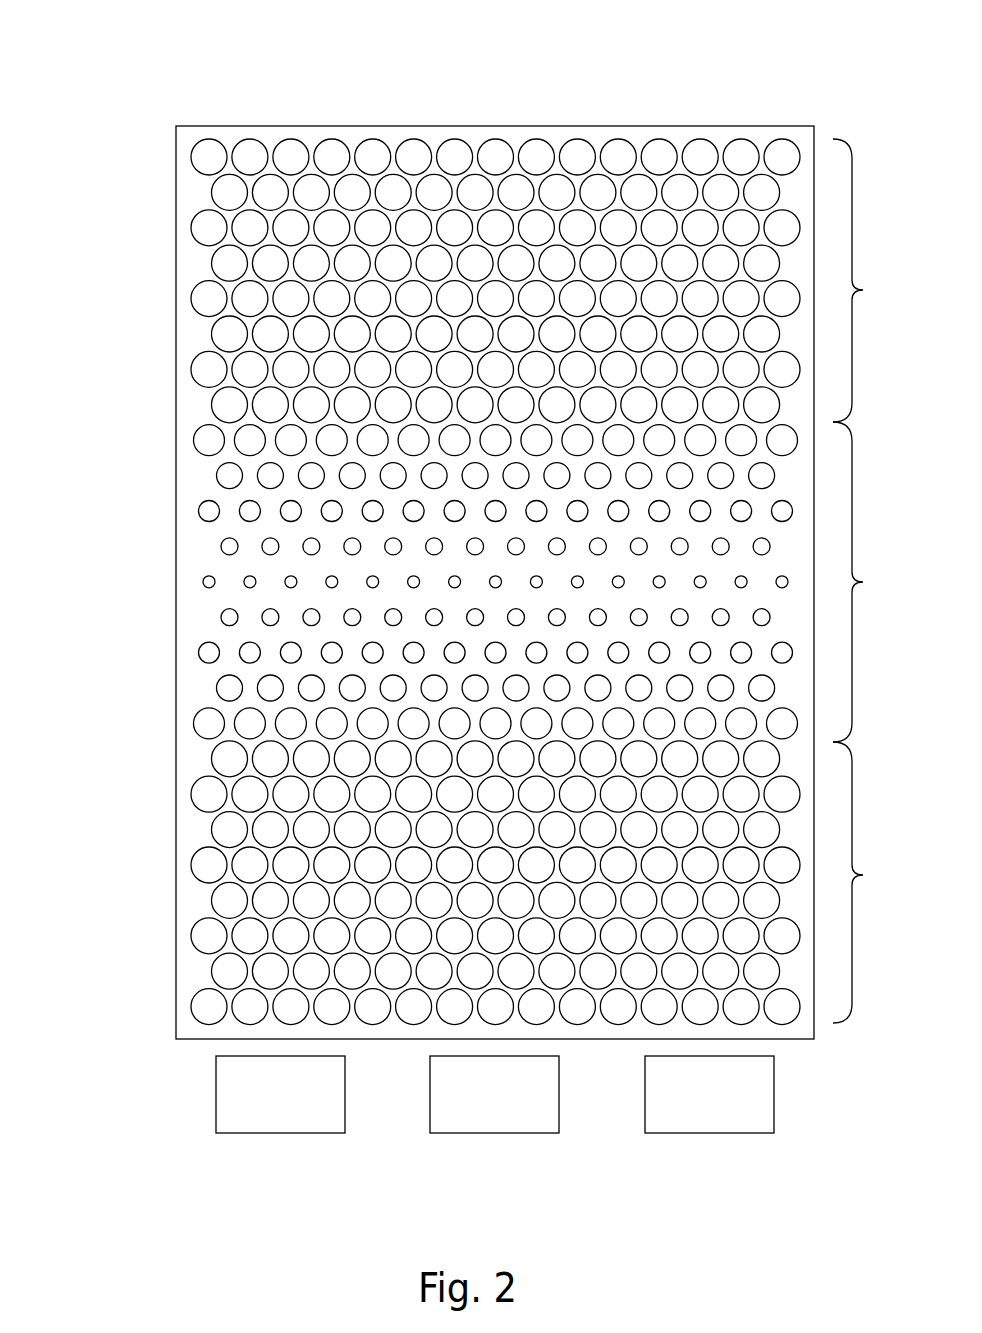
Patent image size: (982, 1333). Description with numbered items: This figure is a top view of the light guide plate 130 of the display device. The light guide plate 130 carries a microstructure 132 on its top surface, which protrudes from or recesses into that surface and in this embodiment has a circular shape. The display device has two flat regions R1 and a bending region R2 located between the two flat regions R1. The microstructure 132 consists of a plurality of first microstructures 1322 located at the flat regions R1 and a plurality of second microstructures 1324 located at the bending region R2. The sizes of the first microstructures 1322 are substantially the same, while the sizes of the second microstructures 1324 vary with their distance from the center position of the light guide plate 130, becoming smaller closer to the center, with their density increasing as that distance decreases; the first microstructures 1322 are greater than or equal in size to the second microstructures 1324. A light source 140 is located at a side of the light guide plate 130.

The light guide plate 130 is at (192, 135).
The microstructure 132 is at (406, 582).
The first microstructures 1322 is at (200, 378).
The second microstructures 1324 is at (440, 582).
The light source 140 is at (280, 1122).
The flat regions R1 is at (874, 581).
The bending region R2 is at (872, 582).